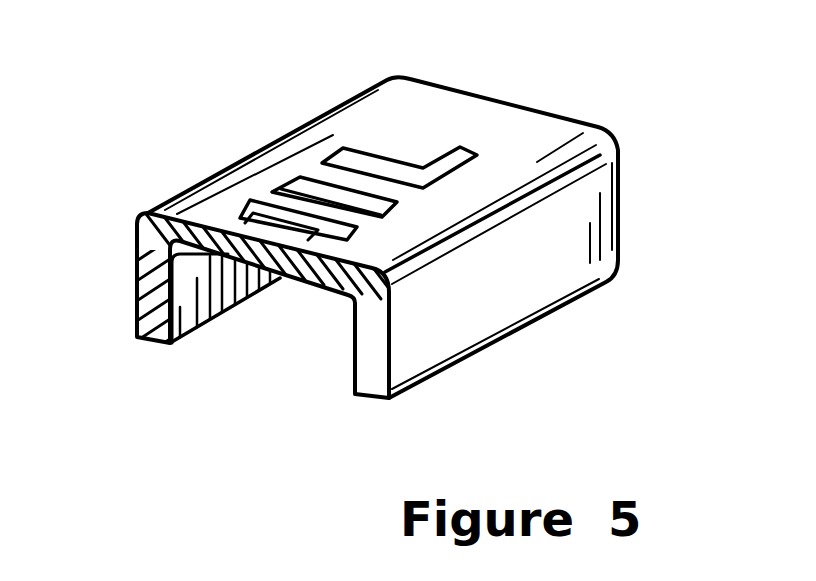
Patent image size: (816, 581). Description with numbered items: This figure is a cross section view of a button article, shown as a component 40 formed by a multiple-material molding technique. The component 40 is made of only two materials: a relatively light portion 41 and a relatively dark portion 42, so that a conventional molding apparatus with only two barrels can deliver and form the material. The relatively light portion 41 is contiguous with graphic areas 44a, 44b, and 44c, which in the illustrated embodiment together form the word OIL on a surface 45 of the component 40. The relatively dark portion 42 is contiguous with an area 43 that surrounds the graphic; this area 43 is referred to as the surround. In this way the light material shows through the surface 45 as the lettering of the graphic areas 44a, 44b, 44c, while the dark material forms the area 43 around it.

The component 40 is at (152, 170).
The relatively light portion 41 is at (163, 272).
The relatively dark portion 42 is at (388, 352).
The area surrounding the graphic 43 is at (535, 155).
The graphic area 44a is at (245, 218).
The graphic area 44b is at (310, 187).
The graphic area 44c is at (392, 176).
The surface 45 is at (440, 112).